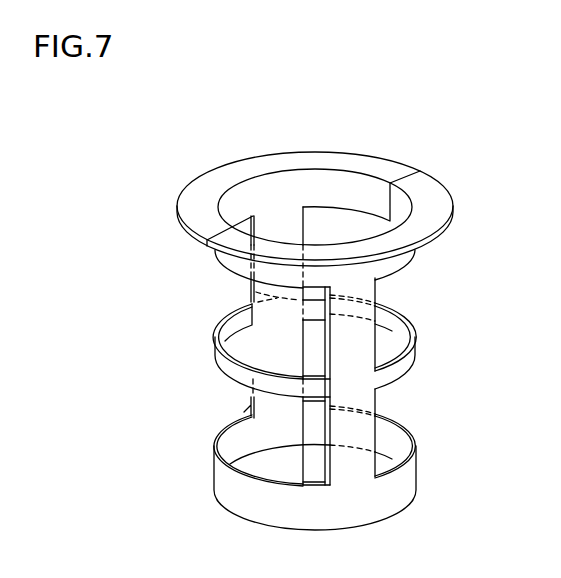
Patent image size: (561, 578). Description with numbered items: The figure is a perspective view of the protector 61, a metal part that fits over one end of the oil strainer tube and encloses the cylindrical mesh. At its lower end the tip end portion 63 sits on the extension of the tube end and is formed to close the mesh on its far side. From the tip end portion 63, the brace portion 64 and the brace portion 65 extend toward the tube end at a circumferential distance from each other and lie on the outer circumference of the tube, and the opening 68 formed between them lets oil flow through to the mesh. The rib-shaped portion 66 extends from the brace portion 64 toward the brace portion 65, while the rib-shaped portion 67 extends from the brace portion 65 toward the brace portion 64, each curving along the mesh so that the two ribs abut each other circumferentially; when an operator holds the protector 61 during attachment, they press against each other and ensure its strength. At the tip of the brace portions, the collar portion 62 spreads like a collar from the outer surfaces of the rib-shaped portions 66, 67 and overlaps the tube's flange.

The protector 61 is at (179, 170).
The collar portion 62 is at (430, 208).
The tip end portion 63 is at (270, 464).
The brace portion 64 is at (355, 316).
The brace portion 65 is at (249, 296).
The rib-shaped portion 66 is at (241, 270).
The rib-shaped portion 67 is at (232, 270).
The opening 68 is at (395, 275).